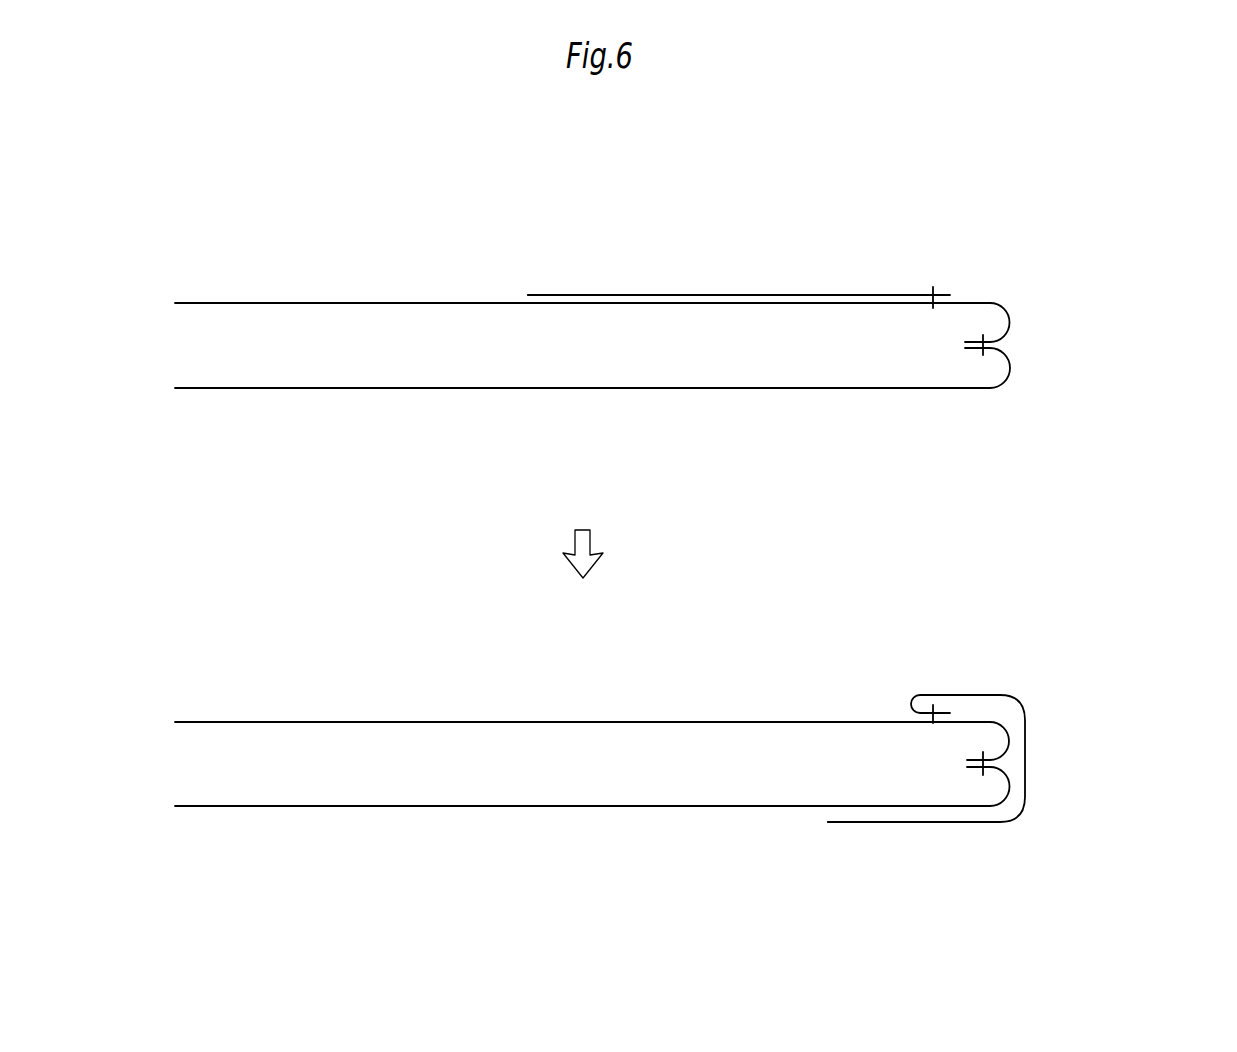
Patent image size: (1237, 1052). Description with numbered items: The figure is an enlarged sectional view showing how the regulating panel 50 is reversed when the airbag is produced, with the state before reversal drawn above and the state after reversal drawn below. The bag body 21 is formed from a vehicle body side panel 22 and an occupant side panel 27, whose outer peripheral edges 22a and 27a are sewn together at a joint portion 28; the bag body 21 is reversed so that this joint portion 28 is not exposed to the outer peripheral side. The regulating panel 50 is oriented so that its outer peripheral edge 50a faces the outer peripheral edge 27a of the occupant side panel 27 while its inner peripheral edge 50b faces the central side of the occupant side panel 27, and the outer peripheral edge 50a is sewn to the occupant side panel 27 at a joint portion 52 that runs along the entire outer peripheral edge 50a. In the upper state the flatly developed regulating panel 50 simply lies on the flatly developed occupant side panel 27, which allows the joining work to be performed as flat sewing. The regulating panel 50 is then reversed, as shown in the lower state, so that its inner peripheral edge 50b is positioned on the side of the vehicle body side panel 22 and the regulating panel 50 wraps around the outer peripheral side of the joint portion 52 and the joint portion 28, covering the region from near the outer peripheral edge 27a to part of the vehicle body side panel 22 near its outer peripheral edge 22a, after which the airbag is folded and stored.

The bag body 21 is at (669, 560).
The vehicle body side panel 22 is at (788, 390).
The outer peripheral edge of the vehicle body side panel 22a is at (1002, 384).
The occupant side panel 27 is at (433, 300).
The outer peripheral edge of the occupant side panel 27a is at (971, 341).
The joint portion 28 is at (983, 355).
The regulating panel 50 is at (826, 559).
The outer peripheral edge of the regulating panel 50a is at (940, 293).
The inner peripheral edge of the regulating panel 50b is at (530, 293).
The joint portion 52 is at (932, 312).